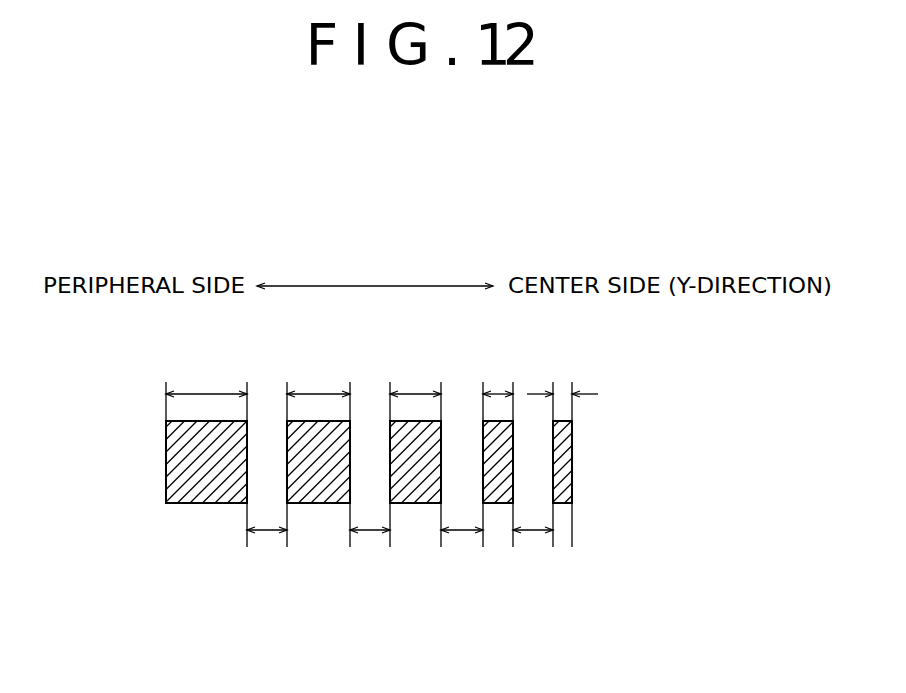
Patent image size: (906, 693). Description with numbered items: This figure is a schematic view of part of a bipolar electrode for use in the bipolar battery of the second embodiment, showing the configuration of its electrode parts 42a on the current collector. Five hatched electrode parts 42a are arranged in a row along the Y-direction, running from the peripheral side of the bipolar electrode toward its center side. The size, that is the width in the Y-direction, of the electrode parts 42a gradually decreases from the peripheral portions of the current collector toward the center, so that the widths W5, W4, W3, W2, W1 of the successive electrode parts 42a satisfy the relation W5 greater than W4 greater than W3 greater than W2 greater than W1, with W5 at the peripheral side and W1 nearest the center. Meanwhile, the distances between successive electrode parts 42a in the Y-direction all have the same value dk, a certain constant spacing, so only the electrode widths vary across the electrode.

The electrode parts 42a is at (203, 490).
The width of electrode part W5 is at (206, 387).
The width of electrode part W4 is at (318, 387).
The width of electrode part W3 is at (415, 387).
The width of electrode part W2 is at (497, 387).
The width of electrode part W1 is at (562, 387).
The distance between successive electrode parts dk is at (409, 536).